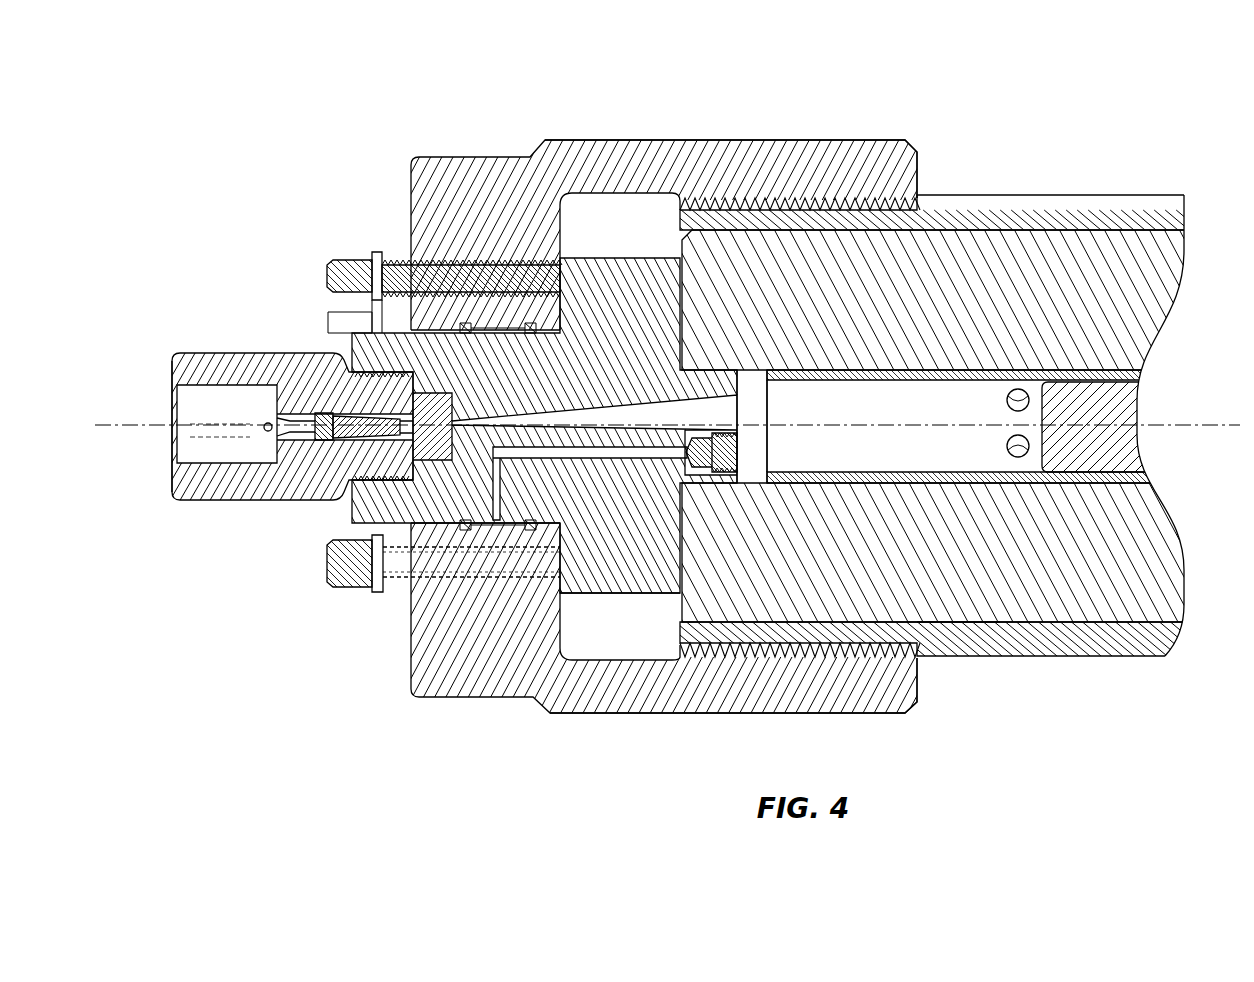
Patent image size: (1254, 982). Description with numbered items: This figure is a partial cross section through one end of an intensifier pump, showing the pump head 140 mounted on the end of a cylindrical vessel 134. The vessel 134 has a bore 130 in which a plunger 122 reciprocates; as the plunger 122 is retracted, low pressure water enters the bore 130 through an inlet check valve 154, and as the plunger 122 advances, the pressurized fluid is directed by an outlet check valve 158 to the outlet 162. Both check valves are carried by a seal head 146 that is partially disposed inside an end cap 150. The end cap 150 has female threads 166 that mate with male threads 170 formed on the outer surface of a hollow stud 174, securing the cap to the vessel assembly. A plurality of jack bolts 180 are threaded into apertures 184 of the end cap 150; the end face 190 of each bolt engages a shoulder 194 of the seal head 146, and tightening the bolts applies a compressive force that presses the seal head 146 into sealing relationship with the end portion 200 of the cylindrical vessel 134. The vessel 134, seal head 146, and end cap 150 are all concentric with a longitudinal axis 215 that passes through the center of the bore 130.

The plunger 122 is at (1110, 440).
The bore 130 is at (753, 455).
The cylindrical vessel 134 is at (1043, 285).
The pump head 140 is at (440, 133).
The seal head 146 is at (617, 595).
The end cap 150 is at (730, 140).
The inlet check valve 154 is at (683, 445).
The outlet check valve 158 is at (240, 353).
The outlet 162 is at (172, 378).
The female threads 166 is at (896, 210).
The male threads 170 is at (848, 655).
The hollow stud 174 is at (957, 640).
The jack bolt 180 is at (327, 295).
The aperture 184 is at (500, 282).
The end face 190 is at (582, 258).
The shoulder 194 is at (537, 303).
The end portion 200 is at (657, 262).
The longitudinal axis 215 is at (150, 425).